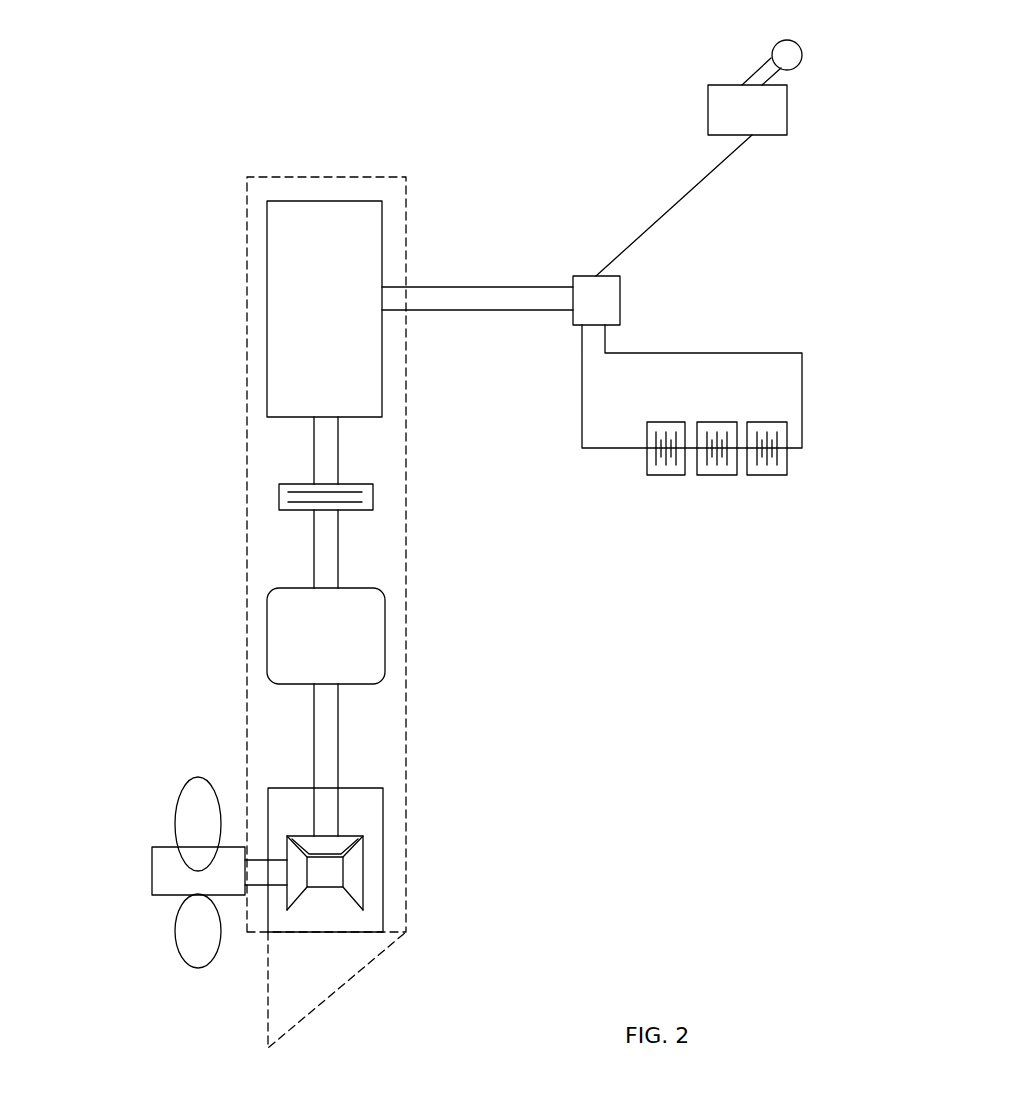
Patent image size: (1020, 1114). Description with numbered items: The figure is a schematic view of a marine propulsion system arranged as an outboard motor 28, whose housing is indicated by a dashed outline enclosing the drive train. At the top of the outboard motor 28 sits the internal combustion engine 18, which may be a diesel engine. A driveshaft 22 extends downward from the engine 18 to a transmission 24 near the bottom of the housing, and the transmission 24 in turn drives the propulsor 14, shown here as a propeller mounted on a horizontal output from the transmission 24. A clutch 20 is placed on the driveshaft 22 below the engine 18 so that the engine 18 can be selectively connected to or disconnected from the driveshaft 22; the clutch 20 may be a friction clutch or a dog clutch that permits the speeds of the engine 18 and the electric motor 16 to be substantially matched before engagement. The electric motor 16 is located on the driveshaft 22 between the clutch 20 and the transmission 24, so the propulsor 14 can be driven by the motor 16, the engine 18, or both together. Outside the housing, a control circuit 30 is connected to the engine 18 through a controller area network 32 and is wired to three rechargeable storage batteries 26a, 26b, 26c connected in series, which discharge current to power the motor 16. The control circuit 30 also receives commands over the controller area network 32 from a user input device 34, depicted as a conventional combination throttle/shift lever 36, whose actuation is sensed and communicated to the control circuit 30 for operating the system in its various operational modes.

The propulsor 14 is at (160, 868).
The electric motor 16 is at (280, 640).
The internal combustion engine 18 is at (292, 310).
The clutch 20 is at (279, 498).
The driveshaft 22 is at (331, 748).
The transmission 24 is at (343, 918).
The rechargeable storage battery 26a is at (663, 477).
The rechargeable storage battery 26b is at (718, 477).
The rechargeable storage battery 26c is at (770, 477).
The outboard motor 28 is at (406, 638).
The control circuit 30 is at (603, 302).
The controller area network 32 is at (502, 283).
The user input device 34 is at (778, 105).
The throttle/shift lever 36 is at (760, 78).